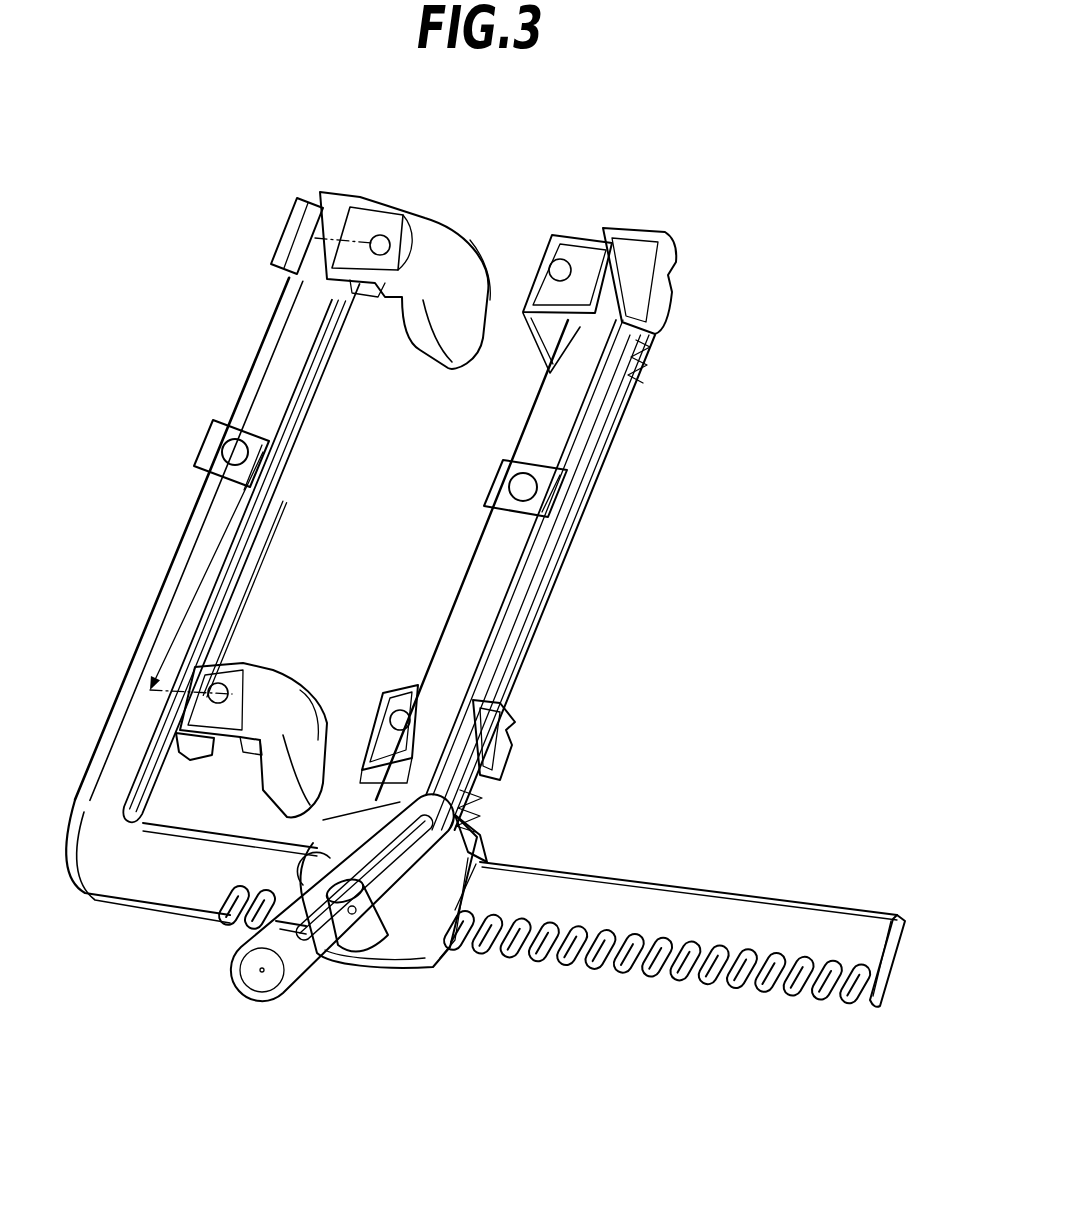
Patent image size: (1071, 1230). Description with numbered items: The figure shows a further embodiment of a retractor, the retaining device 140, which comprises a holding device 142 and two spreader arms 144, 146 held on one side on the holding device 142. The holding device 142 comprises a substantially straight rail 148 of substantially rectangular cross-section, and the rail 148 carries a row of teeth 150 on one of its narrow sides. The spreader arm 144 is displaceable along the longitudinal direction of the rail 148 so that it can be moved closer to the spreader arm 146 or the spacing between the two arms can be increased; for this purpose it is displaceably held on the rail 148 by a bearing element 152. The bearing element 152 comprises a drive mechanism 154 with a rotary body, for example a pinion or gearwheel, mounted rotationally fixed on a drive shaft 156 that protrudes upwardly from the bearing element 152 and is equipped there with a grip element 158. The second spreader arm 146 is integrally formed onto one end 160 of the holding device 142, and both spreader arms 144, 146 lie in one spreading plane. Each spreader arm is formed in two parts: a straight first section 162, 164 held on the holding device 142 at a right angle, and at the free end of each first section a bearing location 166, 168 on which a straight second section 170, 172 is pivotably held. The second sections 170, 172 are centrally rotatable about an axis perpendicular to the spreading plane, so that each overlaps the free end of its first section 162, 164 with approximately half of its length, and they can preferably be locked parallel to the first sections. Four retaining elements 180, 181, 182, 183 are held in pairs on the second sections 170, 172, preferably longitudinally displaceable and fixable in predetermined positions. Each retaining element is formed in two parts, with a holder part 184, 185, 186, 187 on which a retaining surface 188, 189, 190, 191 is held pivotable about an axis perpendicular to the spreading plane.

The retaining device 140 is at (758, 510).
The holding device 142 is at (546, 997).
The spreader arm 144 is at (602, 553).
The spreader arm 146 is at (148, 497).
The rail 148 is at (745, 875).
The row of teeth 150 is at (687, 997).
The bearing element 152 is at (500, 838).
The drive mechanism 154 is at (327, 972).
The drive shaft 156 is at (368, 930).
The grip element 158 is at (262, 978).
The end of the holding device 160 is at (73, 912).
The first section 162 is at (455, 568).
The first section 164 is at (148, 610).
The bearing location 166 is at (488, 478).
The bearing location 168 is at (205, 438).
The second section 170 is at (632, 413).
The second section 172 is at (235, 343).
The retaining element 180 is at (560, 220).
The retaining element 181 is at (540, 714).
The retaining element 182 is at (432, 195).
The retaining element 183 is at (265, 655).
The holder part 184 is at (648, 290).
The holder part 185 is at (505, 745).
The holder part 186 is at (295, 234).
The holder part 187 is at (185, 757).
The retaining surface 188 is at (545, 272).
The retaining surface 189 is at (386, 712).
The retaining surface 190 is at (442, 325).
The retaining surface 191 is at (305, 722).